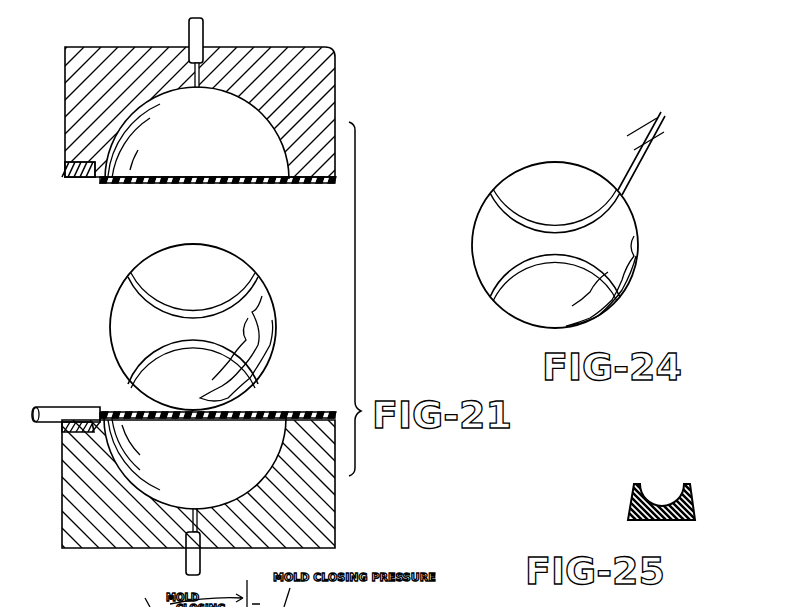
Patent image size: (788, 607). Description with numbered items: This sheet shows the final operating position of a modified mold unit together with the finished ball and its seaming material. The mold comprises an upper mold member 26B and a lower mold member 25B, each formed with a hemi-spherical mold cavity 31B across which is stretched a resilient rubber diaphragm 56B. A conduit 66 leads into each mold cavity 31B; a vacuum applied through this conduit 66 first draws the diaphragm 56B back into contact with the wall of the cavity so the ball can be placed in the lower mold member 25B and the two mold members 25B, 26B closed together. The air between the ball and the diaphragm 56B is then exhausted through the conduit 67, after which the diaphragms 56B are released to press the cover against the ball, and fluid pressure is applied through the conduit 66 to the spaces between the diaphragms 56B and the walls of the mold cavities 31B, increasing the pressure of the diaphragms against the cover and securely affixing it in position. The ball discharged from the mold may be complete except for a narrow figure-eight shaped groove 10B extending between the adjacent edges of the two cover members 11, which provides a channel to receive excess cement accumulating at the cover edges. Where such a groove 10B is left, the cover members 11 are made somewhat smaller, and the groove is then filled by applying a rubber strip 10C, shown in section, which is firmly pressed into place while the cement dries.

In FIG. 21, the eight shaped groove 10B is at (256, 277).
In FIG. 24, the eight shaped groove 10B is at (492, 194).
In FIG. 24, the rubber strip 10C is at (644, 173).
In FIG. 25, the rubber strip 10C is at (690, 506).
In FIG. 21, the cover members 11 is at (266, 305).
In FIG. 24, the cover members 11 is at (560, 164).
In FIG. 21, the mold member 25B is at (70, 487).
In FIG. 21, the mold member 26B is at (319, 47).
In FIG. 21, the hemi-spherical mold cavity 31B is at (196, 298).
In FIG. 21, the rubber diaphragm 56B is at (233, 160).
In FIG. 21, the conduit 66 is at (204, 31).
In FIG. 21, the conduit 67 is at (78, 407).